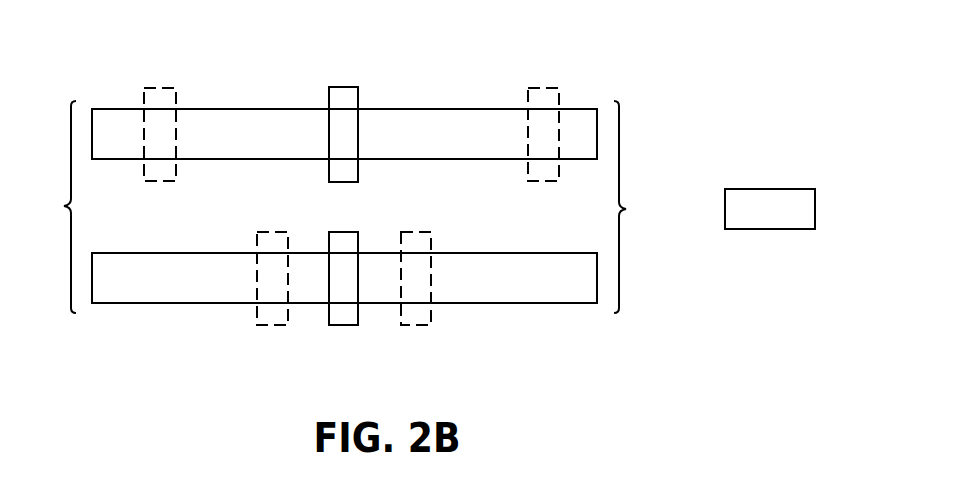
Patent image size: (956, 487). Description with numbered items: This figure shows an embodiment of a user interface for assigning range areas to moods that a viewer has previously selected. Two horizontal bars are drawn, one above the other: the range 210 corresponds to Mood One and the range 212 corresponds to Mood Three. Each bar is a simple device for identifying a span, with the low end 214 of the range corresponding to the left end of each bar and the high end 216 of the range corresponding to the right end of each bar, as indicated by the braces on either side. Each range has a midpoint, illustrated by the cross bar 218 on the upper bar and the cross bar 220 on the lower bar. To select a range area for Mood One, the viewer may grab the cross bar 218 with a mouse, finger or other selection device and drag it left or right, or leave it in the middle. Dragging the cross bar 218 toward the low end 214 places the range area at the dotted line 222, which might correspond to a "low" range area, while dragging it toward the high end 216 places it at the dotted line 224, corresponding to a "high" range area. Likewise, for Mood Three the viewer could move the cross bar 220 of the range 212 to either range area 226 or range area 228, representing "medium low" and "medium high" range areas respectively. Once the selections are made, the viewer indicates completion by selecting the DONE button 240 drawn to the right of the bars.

The range 210 is at (420, 109).
The range 212 is at (527, 303).
The low end 214 is at (48, 207).
The high end 216 is at (644, 207).
The cross bar 218 is at (349, 87).
The cross bar 220 is at (334, 325).
The dotted line 222 is at (167, 88).
The dotted line 224 is at (548, 88).
The range area 226 is at (270, 325).
The range area 228 is at (423, 325).
The DONE button 240 is at (745, 229).